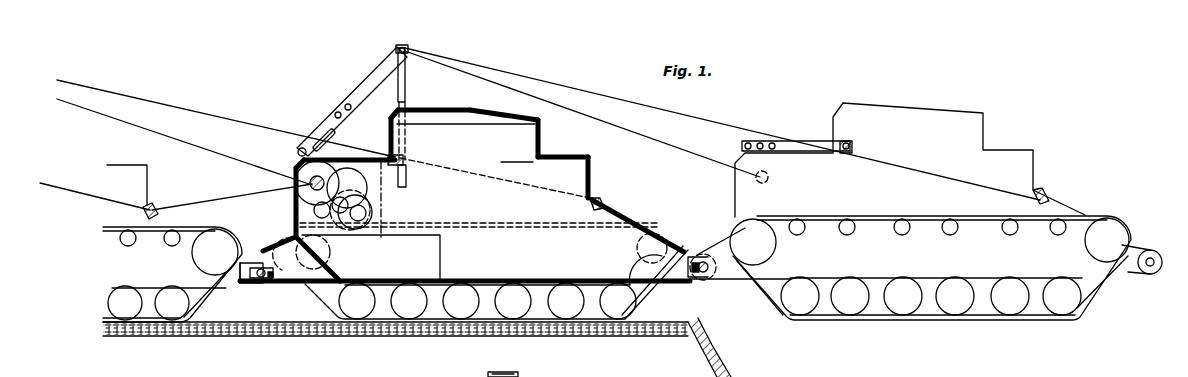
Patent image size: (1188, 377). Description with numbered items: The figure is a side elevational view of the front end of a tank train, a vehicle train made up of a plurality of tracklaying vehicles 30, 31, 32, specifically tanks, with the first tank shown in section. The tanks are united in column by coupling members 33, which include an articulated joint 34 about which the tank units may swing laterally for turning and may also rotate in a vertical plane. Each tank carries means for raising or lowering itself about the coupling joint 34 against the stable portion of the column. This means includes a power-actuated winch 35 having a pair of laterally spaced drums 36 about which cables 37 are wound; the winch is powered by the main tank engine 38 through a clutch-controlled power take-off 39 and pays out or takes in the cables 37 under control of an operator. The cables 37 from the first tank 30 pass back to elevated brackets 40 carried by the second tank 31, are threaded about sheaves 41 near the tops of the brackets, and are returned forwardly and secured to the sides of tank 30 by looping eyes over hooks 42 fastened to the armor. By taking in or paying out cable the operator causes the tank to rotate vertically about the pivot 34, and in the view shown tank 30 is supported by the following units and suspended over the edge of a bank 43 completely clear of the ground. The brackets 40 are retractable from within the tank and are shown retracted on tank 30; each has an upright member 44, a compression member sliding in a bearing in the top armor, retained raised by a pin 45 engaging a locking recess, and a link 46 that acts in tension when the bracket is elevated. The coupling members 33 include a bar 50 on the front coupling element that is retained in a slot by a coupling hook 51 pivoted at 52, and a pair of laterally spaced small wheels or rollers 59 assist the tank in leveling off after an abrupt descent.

The tracklaying vehicle 30 is at (1035, 167).
The tracklaying vehicle 31 is at (591, 172).
The tracklaying vehicle 32 is at (147, 181).
The coupling members 33 is at (279, 284).
The articulated joint 34 is at (697, 276).
The power-actuated winch 35 is at (384, 203).
The drums 36 is at (318, 177).
The cables 37 is at (231, 160).
The main tank engine 38 is at (441, 258).
The power take-off 39 is at (326, 252).
The brackets 40 is at (389, 65).
The sheaves 41 is at (508, 372).
The hooks 42 is at (156, 209).
The bank 43 is at (705, 358).
The upright member 44 is at (406, 90).
The pin 45 is at (405, 180).
The link 46 is at (365, 86).
The bar 50 is at (263, 269).
The coupling hook 51 is at (250, 263).
The pivot 52 is at (274, 275).
The wheels or rollers 59 is at (1153, 251).